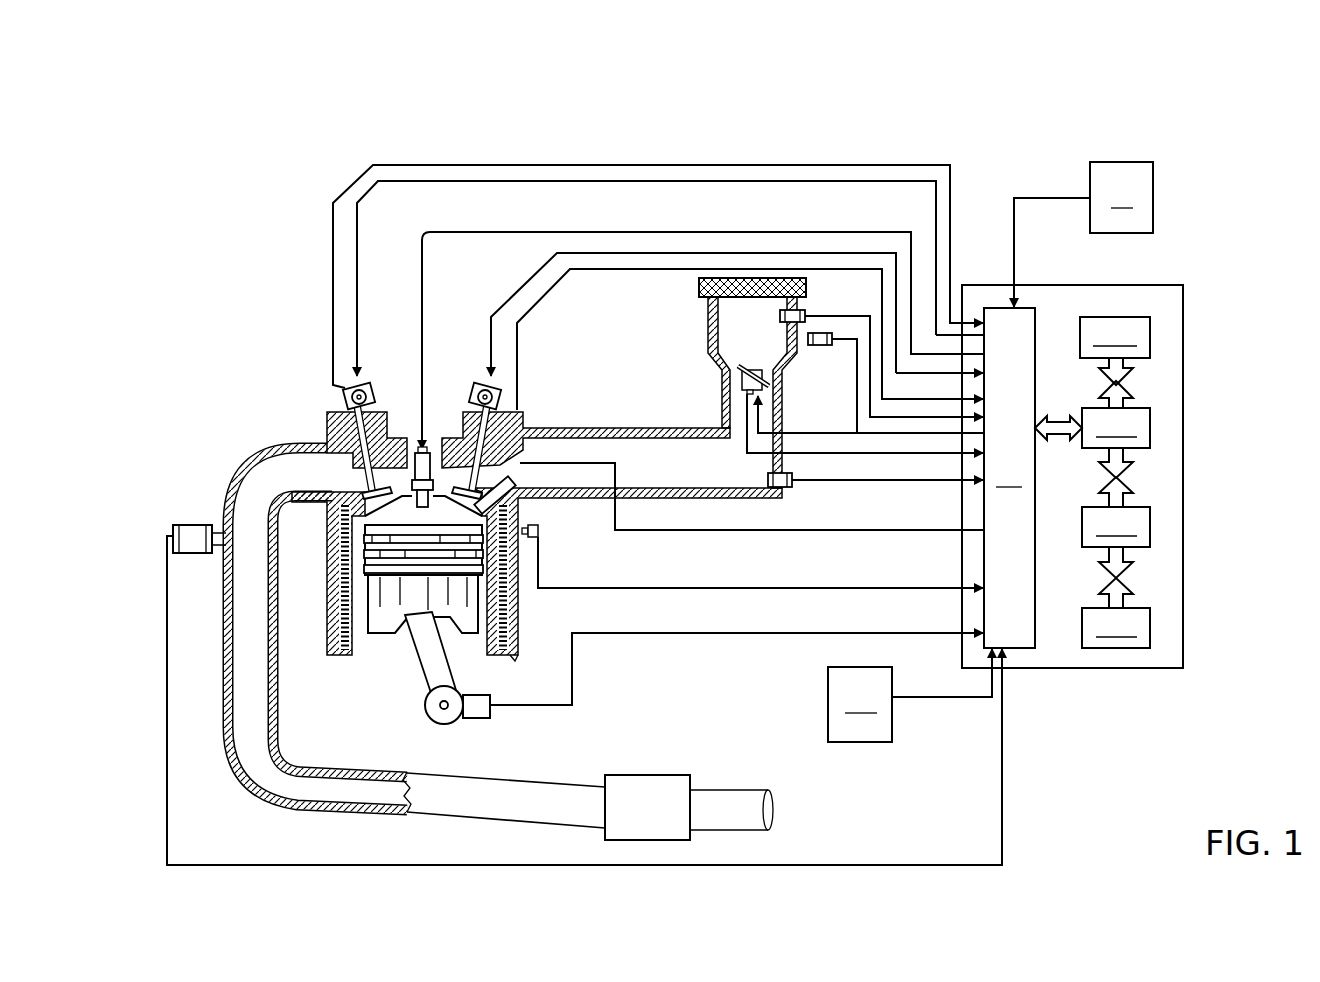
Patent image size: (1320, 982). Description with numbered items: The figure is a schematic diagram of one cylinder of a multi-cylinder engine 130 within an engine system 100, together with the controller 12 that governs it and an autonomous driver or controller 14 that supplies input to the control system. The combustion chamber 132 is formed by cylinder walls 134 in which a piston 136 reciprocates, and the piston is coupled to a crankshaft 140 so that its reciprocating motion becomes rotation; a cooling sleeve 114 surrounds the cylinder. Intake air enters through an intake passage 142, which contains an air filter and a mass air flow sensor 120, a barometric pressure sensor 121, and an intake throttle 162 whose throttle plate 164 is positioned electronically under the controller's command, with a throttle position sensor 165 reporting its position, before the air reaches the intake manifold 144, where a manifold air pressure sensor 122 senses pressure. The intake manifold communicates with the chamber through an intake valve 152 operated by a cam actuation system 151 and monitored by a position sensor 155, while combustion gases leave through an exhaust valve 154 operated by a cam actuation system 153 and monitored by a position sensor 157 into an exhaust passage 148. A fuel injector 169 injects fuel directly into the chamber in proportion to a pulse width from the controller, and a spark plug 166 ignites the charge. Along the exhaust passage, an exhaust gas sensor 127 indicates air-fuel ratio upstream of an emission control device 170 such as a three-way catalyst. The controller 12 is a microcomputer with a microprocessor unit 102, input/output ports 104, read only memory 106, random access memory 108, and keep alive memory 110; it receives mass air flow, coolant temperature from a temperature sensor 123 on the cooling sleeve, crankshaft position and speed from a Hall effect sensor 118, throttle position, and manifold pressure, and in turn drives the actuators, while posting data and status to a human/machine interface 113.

The engine system 100 is at (1216, 92).
The controller 12 is at (1183, 290).
The autonomous driver or controller 14 is at (1083, 234).
The microprocessor unit 102 is at (1152, 426).
The input/output ports 104 is at (1036, 318).
The read only memory 106 is at (1152, 336).
The random access memory 108 is at (1152, 528).
The keep alive memory 110 is at (1152, 626).
The human/machine interface 113 is at (910, 695).
The cooling sleeve 114 is at (507, 642).
The Hall effect sensor 118 is at (478, 718).
The mass air flow sensor 120 is at (800, 309).
The barometric pressure sensor 121 is at (817, 346).
The manifold air pressure sensor 122 is at (787, 489).
The temperature sensor 123 is at (538, 537).
The exhaust gas sensor 127 is at (173, 530).
The engine 130 is at (263, 368).
The combustion chamber 132 is at (398, 512).
The cylinder walls 134 is at (371, 643).
The piston 136 is at (407, 605).
The crankshaft 140 is at (428, 716).
The intake passage 142 is at (770, 337).
The intake manifold 144 is at (685, 471).
The exhaust passage 148 is at (315, 481).
The cam actuation system 151 is at (482, 380).
The intake valve 152 is at (525, 475).
The cam actuation system 153 is at (363, 380).
The exhaust valve 154 is at (327, 443).
The position sensor 155 is at (500, 401).
The position sensor 157 is at (338, 400).
The intake throttle 162 is at (766, 370).
The throttle plate 164 is at (728, 364).
The throttle position sensor 165 is at (743, 395).
The spark plug 166 is at (424, 445).
The fuel injector 169 is at (520, 503).
The emission control device 170 is at (588, 806).